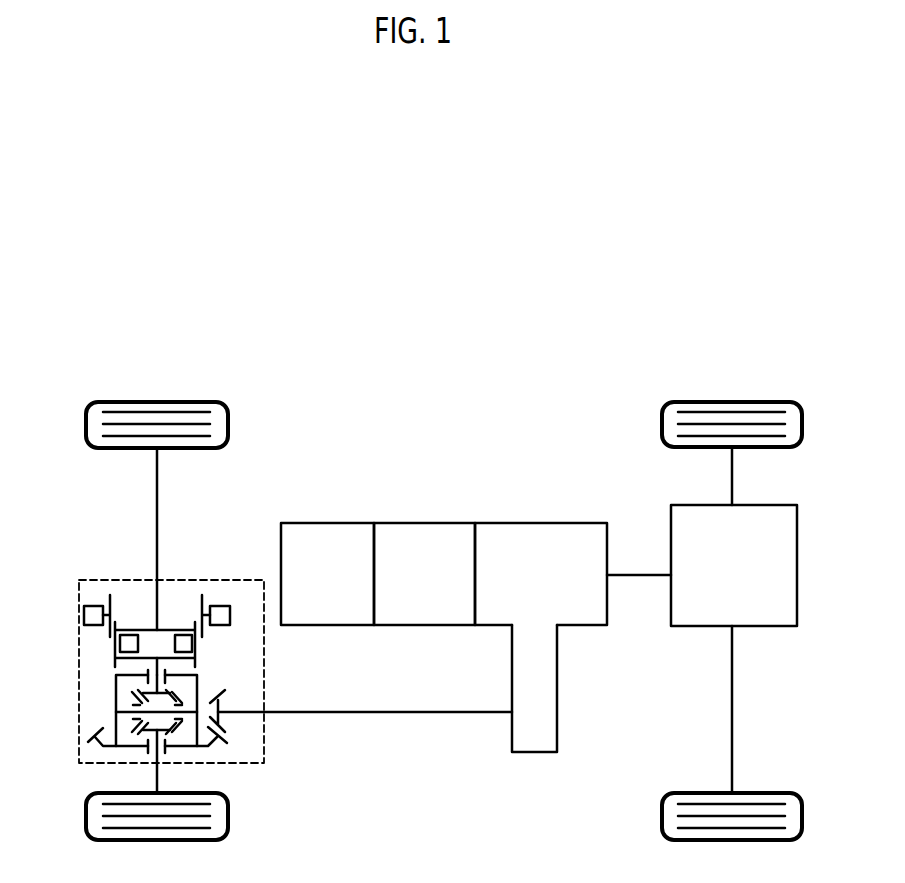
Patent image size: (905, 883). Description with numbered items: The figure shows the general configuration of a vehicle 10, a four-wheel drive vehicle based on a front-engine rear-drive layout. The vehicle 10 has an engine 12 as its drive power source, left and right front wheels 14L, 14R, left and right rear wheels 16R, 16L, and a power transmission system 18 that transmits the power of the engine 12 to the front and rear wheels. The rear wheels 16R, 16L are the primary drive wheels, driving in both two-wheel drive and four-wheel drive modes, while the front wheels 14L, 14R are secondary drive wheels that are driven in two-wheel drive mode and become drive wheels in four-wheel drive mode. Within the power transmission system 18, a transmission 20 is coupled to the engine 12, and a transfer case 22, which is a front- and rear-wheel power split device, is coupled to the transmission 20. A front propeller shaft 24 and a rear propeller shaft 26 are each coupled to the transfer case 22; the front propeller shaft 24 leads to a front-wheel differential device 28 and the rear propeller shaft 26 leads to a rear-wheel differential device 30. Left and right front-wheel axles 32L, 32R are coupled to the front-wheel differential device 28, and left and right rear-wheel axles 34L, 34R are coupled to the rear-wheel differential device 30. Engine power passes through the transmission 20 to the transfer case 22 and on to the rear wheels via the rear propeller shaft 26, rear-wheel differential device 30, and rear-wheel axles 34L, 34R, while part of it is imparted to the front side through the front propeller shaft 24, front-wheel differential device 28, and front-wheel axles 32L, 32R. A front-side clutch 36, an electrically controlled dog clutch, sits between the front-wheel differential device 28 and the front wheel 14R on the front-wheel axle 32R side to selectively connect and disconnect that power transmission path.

The vehicle 10 is at (652, 357).
The engine 12 is at (330, 538).
The right front wheel 14R is at (125, 410).
The left front wheel 14L is at (127, 833).
The right rear wheel 16R is at (715, 410).
The left rear wheel 16L is at (715, 833).
The power transmission system 18 is at (450, 645).
The transmission 20 is at (430, 538).
The transfer case 22 is at (538, 538).
The front propeller shaft 24 is at (350, 712).
The rear propeller shaft 26 is at (637, 572).
The front-wheel differential device 28 is at (76, 766).
The rear-wheel differential device 30 is at (713, 610).
The right front-wheel axle 32R is at (157, 503).
The left front-wheel axle 32L is at (157, 779).
The right rear-wheel axle 34R is at (732, 475).
The left rear-wheel axle 34L is at (732, 747).
The front-side clutch 36 is at (102, 643).